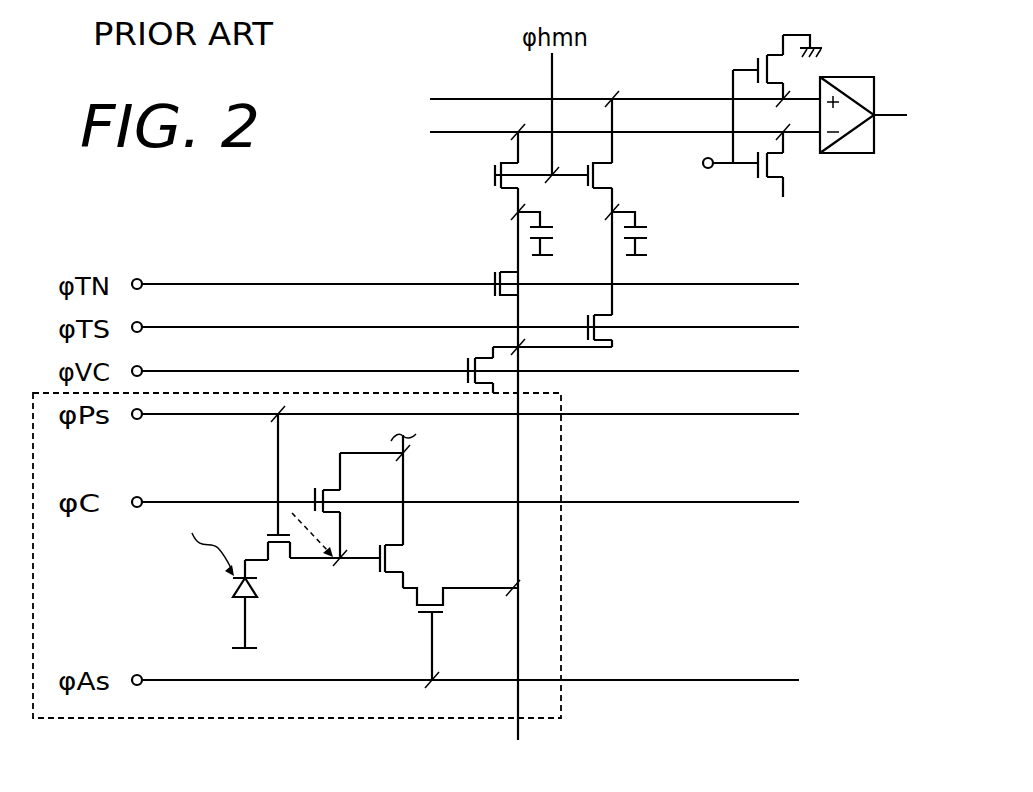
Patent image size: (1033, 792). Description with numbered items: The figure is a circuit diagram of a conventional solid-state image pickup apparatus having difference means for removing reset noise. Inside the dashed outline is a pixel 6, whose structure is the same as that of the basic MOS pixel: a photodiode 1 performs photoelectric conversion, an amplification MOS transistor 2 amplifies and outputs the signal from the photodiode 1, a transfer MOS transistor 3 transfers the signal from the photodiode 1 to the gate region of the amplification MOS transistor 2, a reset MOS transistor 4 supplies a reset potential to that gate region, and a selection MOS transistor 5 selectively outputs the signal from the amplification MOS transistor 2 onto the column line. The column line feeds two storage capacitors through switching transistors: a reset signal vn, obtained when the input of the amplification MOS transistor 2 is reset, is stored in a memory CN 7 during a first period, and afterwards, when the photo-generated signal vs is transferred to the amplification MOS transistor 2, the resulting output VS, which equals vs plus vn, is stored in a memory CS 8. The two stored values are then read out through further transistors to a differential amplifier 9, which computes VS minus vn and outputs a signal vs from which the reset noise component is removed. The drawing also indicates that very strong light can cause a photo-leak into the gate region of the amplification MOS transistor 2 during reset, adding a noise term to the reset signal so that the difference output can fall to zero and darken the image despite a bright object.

The photodiode 1 is at (252, 603).
The amplification MOS transistor 2 is at (405, 556).
The transfer MOS transistor 3 is at (264, 546).
The reset MOS transistor 4 is at (323, 488).
The selection MOS transistor 5 is at (440, 615).
The pixel 6 is at (562, 458).
The memory CN 7 is at (562, 237).
The memory CS 8 is at (655, 237).
The differential amplifier 9 is at (852, 77).